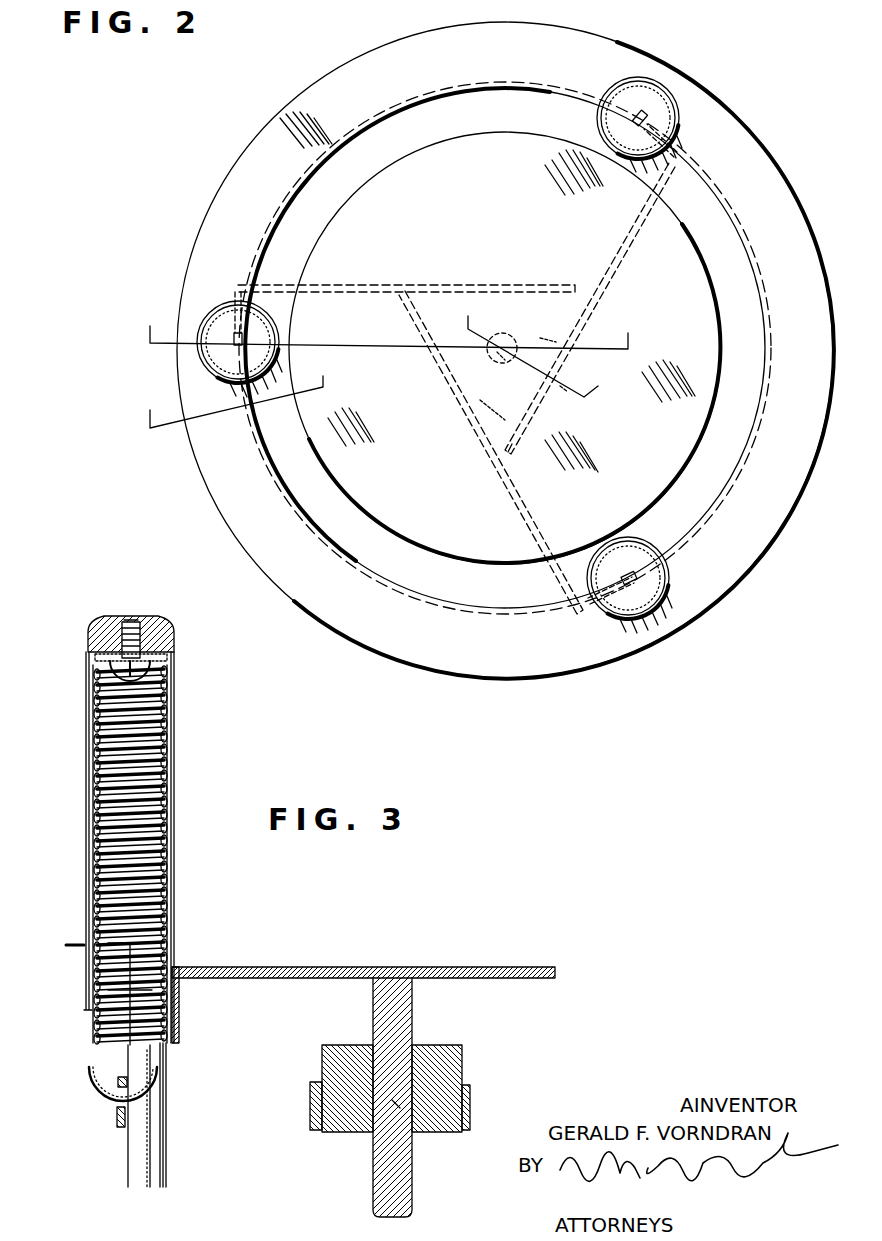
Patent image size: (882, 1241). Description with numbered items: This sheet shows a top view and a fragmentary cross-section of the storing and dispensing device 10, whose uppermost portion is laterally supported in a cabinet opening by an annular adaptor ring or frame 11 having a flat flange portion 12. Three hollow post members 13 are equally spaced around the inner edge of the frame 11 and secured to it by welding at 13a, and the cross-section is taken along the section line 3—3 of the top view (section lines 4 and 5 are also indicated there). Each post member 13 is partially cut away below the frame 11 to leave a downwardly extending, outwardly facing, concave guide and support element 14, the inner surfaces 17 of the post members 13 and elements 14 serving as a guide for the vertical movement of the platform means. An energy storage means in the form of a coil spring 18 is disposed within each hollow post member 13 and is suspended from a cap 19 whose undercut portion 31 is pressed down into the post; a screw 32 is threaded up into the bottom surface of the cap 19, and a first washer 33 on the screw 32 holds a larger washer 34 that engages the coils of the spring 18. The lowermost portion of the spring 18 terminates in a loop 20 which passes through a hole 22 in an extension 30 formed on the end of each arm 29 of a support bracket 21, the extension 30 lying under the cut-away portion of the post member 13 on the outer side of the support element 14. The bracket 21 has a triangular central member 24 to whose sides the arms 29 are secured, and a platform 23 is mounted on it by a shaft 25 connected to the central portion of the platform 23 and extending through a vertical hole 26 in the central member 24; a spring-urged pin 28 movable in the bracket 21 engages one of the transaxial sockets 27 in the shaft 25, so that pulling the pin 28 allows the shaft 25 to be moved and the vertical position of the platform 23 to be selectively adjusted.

In FIG. 2, the storing and dispensing device 10 is at (368, 42).
In FIG. 2, the annular adaptor ring or frame 11 is at (809, 320).
In FIG. 3, the annular adaptor ring or frame 11 is at (86, 962).
In FIG. 2, the flat flange portion 12 is at (752, 160).
In FIG. 3, the flat flange portion 12 is at (66, 942).
In FIG. 2, the hollow post members 13 is at (662, 108).
In FIG. 3, the hollow post members 13 is at (174, 742).
In FIG. 3, the welding 13a is at (82, 941).
In FIG. 3, the guide and support element 14 is at (135, 1170).
In FIG. 2, the inner surfaces 17 is at (620, 167).
In FIG. 3, the inner surfaces 17 is at (168, 1145).
In FIG. 3, the coil spring 18 is at (93, 742).
In FIG. 2, the cap 19 is at (642, 98).
In FIG. 3, the cap 19 is at (150, 615).
In FIG. 3, the loop 20 is at (88, 1068).
In FIG. 2, the support bracket 21 is at (456, 388).
In FIG. 3, the support bracket 21 is at (398, 1097).
In FIG. 3, the hole 22 is at (116, 1088).
In FIG. 2, the platform 23 is at (432, 184).
In FIG. 3, the platform 23 is at (292, 967).
In FIG. 2, the triangular central member 24 is at (497, 410).
In FIG. 3, the triangular central member 24 is at (433, 1045).
In FIG. 2, the shaft 25 is at (497, 355).
In FIG. 3, the shaft 25 is at (392, 1185).
In FIG. 2, the vertical hole 26 is at (500, 338).
In FIG. 3, the vertical hole 26 is at (400, 1108).
In FIG. 2, the transaxial sockets 27 is at (545, 335).
In FIG. 2, the pin 28 is at (565, 388).
In FIG. 2, the arms 29 is at (374, 283).
In FIG. 3, the arms 29 is at (310, 1120).
In FIG. 2, the extension 30 is at (672, 112).
In FIG. 3, the extension 30 is at (116, 1118).
In FIG. 3, the undercut portion 31 is at (102, 630).
In FIG. 3, the screw 32 is at (130, 620).
In FIG. 3, the first washer 33 is at (168, 658).
In FIG. 3, the larger washer 34 is at (170, 626).
In FIG. 2, the section line 3— 3 is at (388, 325).
In FIG. 2, the section line 4- 4 is at (233, 391).
In FIG. 2, the section line 5- 5 is at (537, 345).